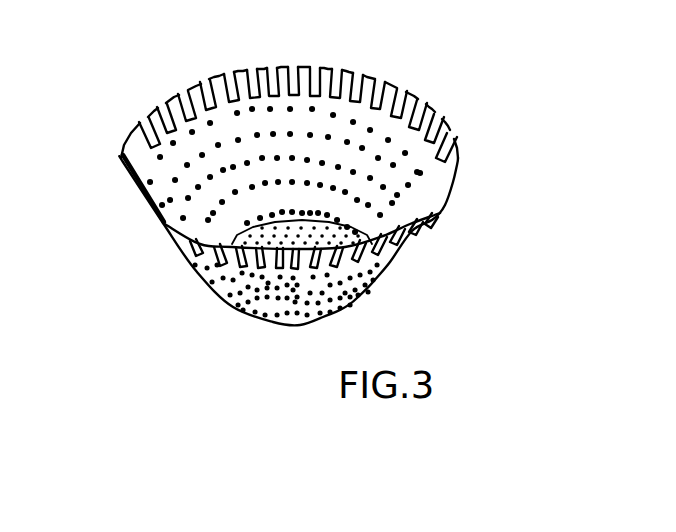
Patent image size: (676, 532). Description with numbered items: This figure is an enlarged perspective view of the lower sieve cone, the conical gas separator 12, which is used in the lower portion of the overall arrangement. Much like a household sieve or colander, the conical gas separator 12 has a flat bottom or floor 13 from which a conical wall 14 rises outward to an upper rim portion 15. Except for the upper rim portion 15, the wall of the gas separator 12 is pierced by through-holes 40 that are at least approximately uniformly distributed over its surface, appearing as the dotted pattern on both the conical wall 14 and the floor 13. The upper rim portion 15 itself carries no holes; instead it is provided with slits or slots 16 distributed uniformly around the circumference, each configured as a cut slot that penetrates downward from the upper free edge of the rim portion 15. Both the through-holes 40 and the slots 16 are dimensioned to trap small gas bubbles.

The conical gas separator 12 is at (447, 215).
The flat bottom 13 is at (360, 241).
The conical wall 14 is at (197, 203).
The upper rim portion 15 is at (352, 92).
The slots 16 is at (167, 90).
The through-holes 40 is at (294, 240).